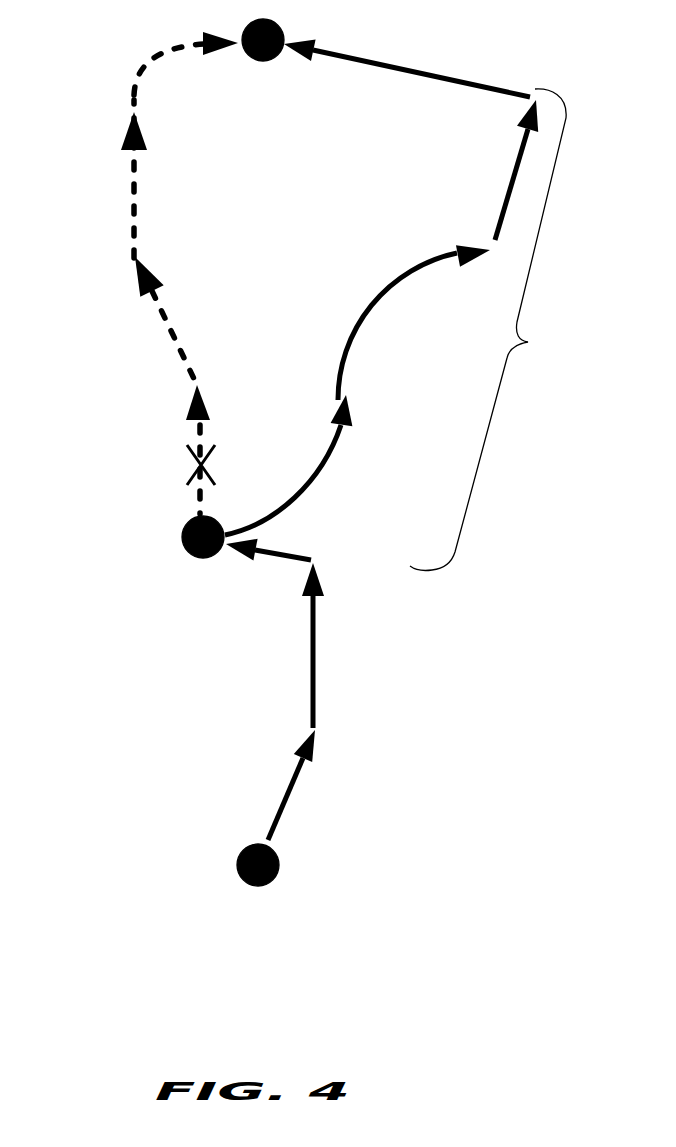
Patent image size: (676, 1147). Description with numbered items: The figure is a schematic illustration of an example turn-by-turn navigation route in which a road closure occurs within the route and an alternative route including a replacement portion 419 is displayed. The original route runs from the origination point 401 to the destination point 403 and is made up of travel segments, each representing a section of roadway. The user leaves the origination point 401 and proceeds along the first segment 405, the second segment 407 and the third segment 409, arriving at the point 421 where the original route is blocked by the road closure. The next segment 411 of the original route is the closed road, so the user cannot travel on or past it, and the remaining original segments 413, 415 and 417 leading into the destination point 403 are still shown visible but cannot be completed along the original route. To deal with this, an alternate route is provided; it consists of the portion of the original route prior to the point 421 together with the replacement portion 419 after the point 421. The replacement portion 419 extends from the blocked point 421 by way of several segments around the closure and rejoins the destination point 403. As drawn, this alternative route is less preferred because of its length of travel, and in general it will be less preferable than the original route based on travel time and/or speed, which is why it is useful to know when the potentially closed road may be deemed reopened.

The origination point 401 is at (250, 843).
The destination point 403 is at (255, 62).
The travel segment 405 is at (288, 780).
The travel segment 407 is at (310, 642).
The travel segment 409 is at (270, 562).
The closed road segment 411 is at (190, 427).
The travel segment 413 is at (163, 335).
The travel segment 415 is at (132, 188).
The travel segment 417 is at (150, 70).
The replacement portion 419 is at (404, 305).
The point where the original route is blocked 421 is at (181, 533).